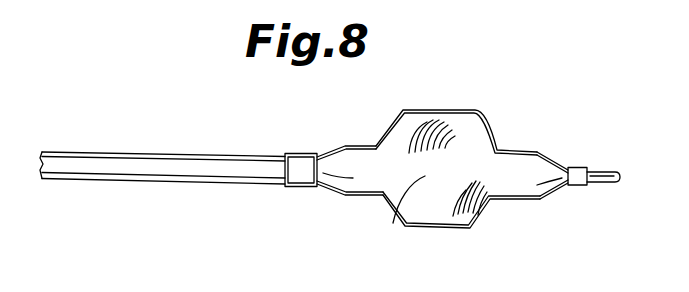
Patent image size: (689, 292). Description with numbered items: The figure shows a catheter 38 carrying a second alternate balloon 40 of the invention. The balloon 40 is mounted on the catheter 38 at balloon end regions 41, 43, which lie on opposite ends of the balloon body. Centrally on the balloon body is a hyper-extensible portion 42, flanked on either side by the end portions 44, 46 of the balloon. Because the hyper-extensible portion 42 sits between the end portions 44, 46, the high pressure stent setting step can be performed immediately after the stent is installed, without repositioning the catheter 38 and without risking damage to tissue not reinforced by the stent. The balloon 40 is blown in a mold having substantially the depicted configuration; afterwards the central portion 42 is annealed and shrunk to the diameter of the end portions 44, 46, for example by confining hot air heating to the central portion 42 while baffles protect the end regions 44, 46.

The catheter 38 is at (165, 181).
The balloon end region 41 is at (300, 154).
The end portion of balloon 44 is at (346, 196).
The hyper-extensible portion 42 is at (446, 230).
The balloon 40 is at (396, 221).
The end portion of balloon 46 is at (517, 200).
The balloon end region 43 is at (578, 168).